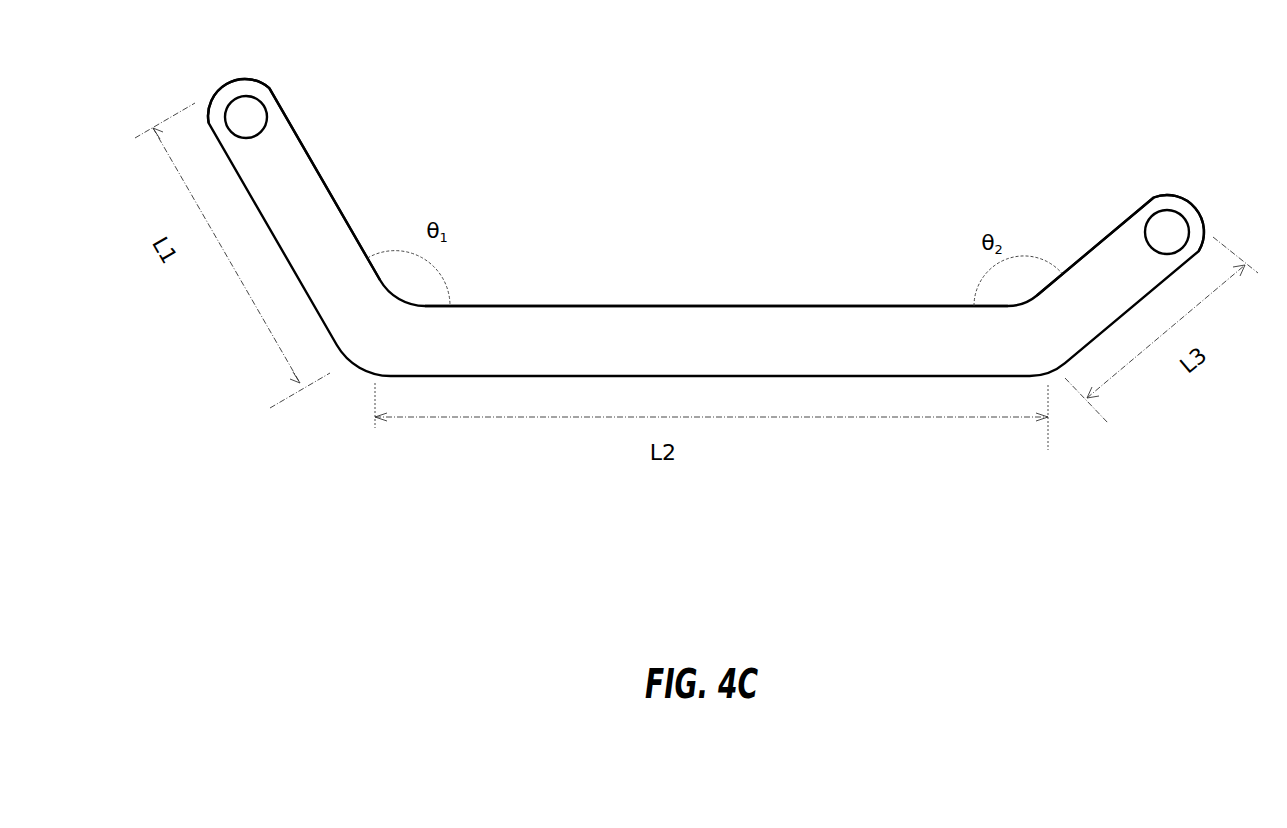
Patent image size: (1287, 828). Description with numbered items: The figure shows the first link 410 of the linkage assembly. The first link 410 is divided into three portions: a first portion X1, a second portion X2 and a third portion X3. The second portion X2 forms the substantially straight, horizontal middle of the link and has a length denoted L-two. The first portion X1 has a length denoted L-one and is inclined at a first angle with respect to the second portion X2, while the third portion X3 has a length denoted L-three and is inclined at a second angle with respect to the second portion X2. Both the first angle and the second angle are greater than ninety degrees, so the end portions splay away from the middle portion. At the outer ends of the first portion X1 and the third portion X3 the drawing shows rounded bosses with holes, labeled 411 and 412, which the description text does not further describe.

The first link 410 is at (599, 304).
The first boss 411 is at (278, 95).
The second boss 412 is at (1192, 207).
The first portion X1 is at (317, 183).
The second portion X2 is at (760, 312).
The third portion X3 is at (1113, 236).